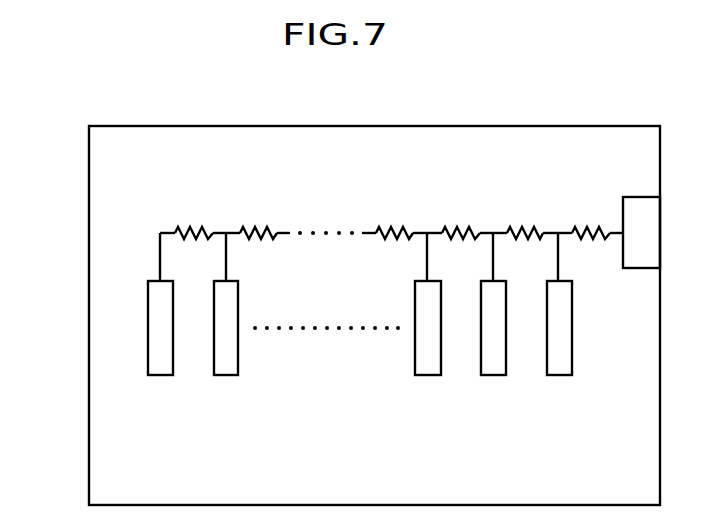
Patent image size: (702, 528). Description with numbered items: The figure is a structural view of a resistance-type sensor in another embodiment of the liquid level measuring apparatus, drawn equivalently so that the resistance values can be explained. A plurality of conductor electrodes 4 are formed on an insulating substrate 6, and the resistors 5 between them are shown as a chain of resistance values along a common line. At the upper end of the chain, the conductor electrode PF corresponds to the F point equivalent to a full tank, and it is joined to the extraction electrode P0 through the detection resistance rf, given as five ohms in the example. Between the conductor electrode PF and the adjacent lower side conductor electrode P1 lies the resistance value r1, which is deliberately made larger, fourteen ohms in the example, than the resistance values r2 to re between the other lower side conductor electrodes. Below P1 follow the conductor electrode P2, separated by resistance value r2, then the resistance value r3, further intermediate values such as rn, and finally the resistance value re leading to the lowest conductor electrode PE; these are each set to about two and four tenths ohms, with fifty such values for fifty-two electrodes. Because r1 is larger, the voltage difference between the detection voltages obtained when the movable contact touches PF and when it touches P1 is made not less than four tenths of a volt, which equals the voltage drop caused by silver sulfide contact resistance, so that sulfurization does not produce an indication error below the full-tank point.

The conductor electrodes 4 is at (367, 371).
The resistor 5 is at (375, 214).
The insulating substrate 6 is at (104, 183).
The resistance value re is at (193, 226).
The resistance value rn is at (268, 226).
The resistance value r3 is at (378, 227).
The resistance value r2 is at (462, 227).
The resistance value r1 is at (526, 228).
The detection resistance rf is at (592, 228).
The conductor electrode PE is at (164, 368).
The conductor electrode P2 is at (429, 366).
The conductor electrode P1 is at (492, 366).
The conductor electrode PF is at (562, 366).
The extraction electrode P0 is at (641, 258).